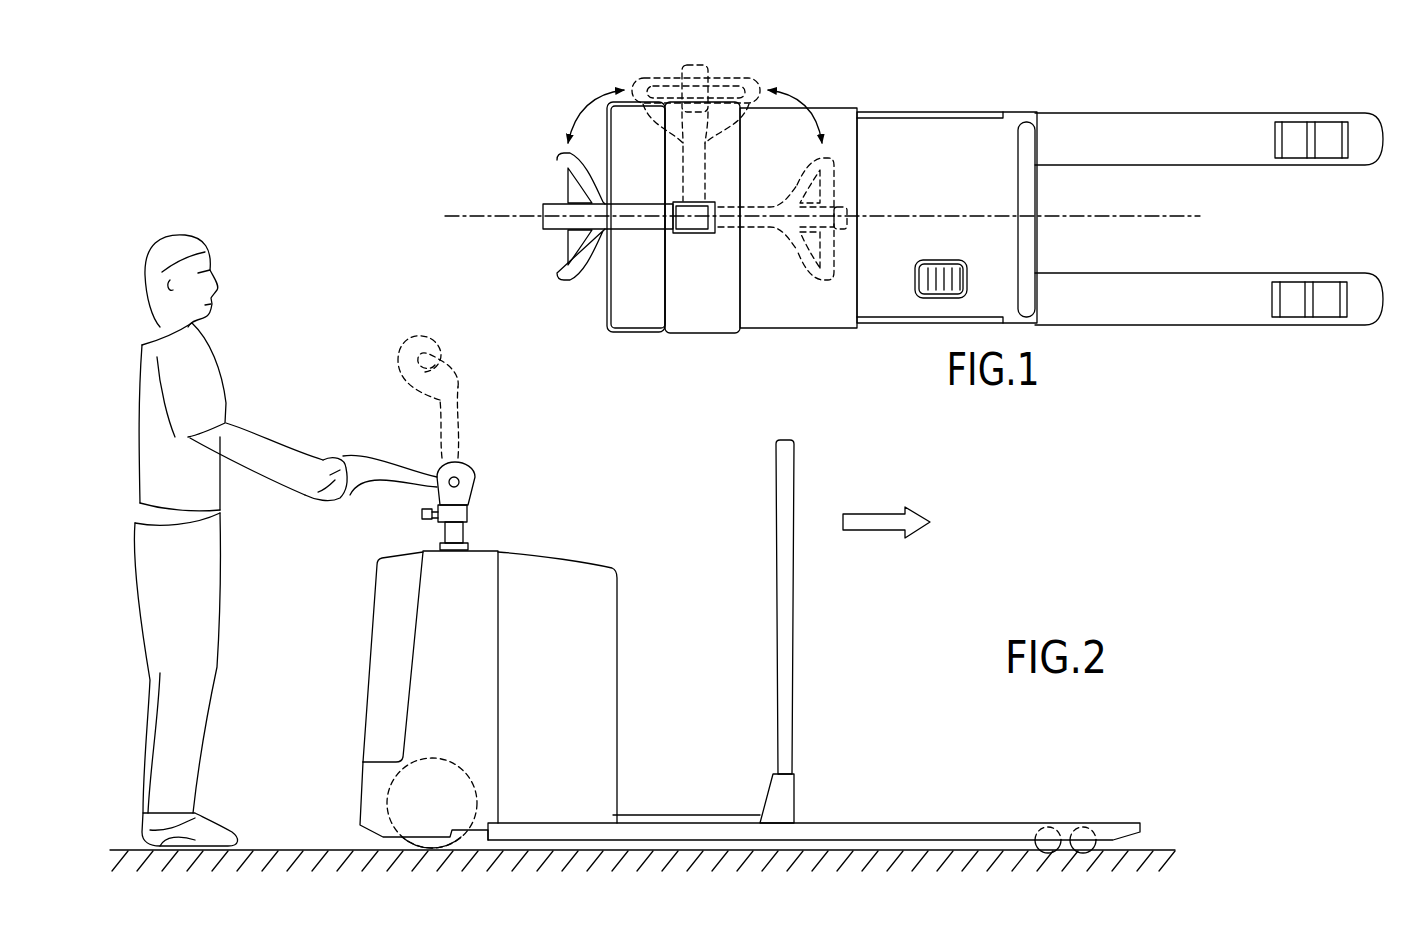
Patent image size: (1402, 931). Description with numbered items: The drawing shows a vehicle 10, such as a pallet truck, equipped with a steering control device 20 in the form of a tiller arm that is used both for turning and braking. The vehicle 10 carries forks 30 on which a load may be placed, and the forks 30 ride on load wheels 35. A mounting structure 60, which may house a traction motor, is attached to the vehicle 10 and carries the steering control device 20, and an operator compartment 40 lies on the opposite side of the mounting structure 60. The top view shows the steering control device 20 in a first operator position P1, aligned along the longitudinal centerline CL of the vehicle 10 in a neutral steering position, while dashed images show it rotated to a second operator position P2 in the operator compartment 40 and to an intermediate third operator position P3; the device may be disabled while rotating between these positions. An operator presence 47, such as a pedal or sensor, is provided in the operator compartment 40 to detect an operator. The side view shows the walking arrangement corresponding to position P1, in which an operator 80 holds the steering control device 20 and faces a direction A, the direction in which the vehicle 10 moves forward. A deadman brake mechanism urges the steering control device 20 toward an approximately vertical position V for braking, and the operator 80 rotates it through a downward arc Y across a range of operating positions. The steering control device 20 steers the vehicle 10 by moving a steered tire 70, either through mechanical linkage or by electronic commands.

In FIG. 1, the vehicle 10 is at (1172, 87).
In FIG. 2, the vehicle 10 is at (1032, 509).
In FIG. 1, the steering control device 20 is at (545, 262).
In FIG. 2, the steering control device 20 is at (312, 521).
In FIG. 1, the forks 30 is at (1362, 113).
In FIG. 2, the forks 30 is at (930, 823).
In FIG. 1, the load wheels 35 is at (1295, 128).
In FIG. 2, the load wheels 35 is at (1040, 827).
In FIG. 1, the operator compartment 40 is at (958, 143).
In FIG. 2, the operator compartment 40 is at (692, 583).
In FIG. 1, the operator presence 47 is at (915, 278).
In FIG. 1, the mounting structure 60 is at (703, 334).
In FIG. 2, the mounting structure 60 is at (568, 562).
In FIG. 2, the steered tire 70 is at (433, 762).
In FIG. 2, the operator 80 is at (177, 235).
In FIG. 1, the first operator position P1 is at (540, 157).
In FIG. 2, the first operator position P1 is at (313, 453).
In FIG. 1, the second operator position P2 is at (840, 155).
In FIG. 1, the third operator position P3 is at (630, 70).
In FIG. 1, the longitudinal centerline CL is at (489, 213).
In FIG. 2, the vertical position V is at (463, 363).
In FIG. 2, the downward arc Y is at (400, 385).
In FIG. 2, the direction A is at (899, 523).